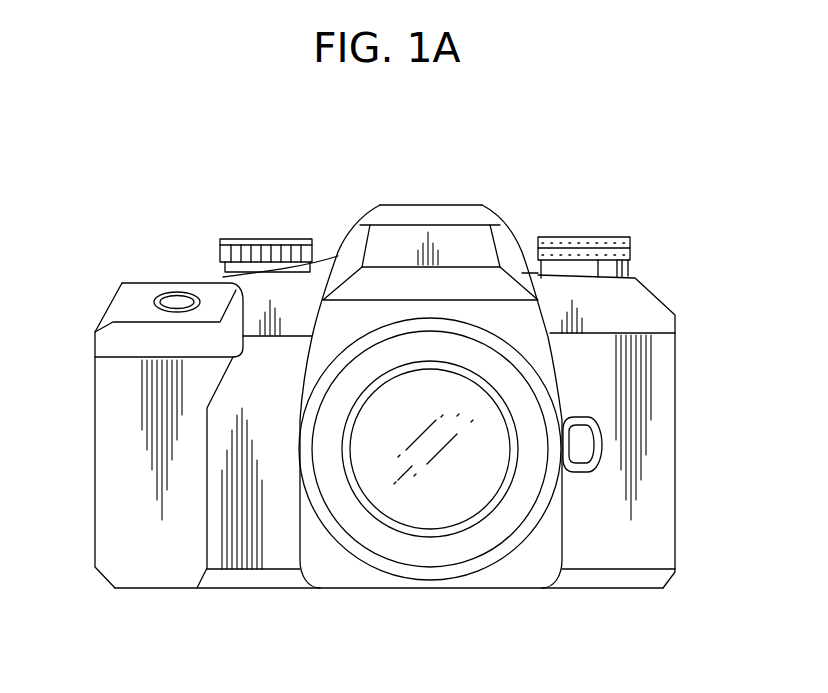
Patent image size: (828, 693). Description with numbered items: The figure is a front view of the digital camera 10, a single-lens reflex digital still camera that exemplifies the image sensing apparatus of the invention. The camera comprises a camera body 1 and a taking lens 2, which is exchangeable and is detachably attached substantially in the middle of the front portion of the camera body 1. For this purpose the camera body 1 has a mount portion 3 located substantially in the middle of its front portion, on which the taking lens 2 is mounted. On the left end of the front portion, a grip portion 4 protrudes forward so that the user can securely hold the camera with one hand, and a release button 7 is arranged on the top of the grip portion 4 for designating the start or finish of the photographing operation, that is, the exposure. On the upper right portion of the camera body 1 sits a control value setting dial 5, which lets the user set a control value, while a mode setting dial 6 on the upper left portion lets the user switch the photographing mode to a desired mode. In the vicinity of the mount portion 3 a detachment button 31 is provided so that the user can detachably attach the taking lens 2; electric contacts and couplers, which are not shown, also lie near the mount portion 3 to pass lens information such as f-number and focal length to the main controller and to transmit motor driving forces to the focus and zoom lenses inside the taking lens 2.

The camera body 1 is at (643, 380).
The taking lens 2 is at (465, 550).
The mount portion 3 is at (421, 577).
The grip portion 4 is at (125, 423).
The control value setting dial 5 is at (578, 235).
The mode setting dial 6 is at (260, 237).
The release button 7 is at (180, 297).
The digital camera 10 is at (433, 198).
The detachment button 31 is at (583, 448).